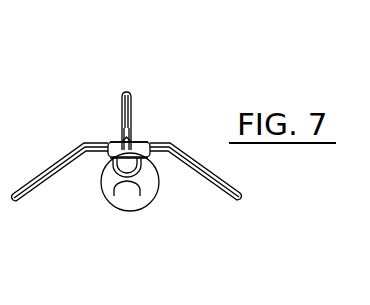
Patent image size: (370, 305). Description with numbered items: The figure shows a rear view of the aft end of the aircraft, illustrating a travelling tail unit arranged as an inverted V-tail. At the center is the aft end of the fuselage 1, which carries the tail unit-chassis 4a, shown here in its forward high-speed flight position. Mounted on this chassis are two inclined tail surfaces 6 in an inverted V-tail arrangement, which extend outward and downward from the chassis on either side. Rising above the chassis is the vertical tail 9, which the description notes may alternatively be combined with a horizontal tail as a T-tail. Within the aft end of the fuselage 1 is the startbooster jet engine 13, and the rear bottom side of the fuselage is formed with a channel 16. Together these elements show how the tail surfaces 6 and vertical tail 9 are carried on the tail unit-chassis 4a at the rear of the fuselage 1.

The fuselage 1 is at (130, 203).
The tail unit-chassis in its forward high-speed flight position 4a is at (144, 139).
The two inclined tail surfaces in an inverted V-tail arrangement 6 is at (64, 158).
The vertical tail 9 is at (130, 105).
The startbooster jet engine 13 is at (137, 172).
The channel in the rear bottom side of the fuselage 16 is at (120, 200).